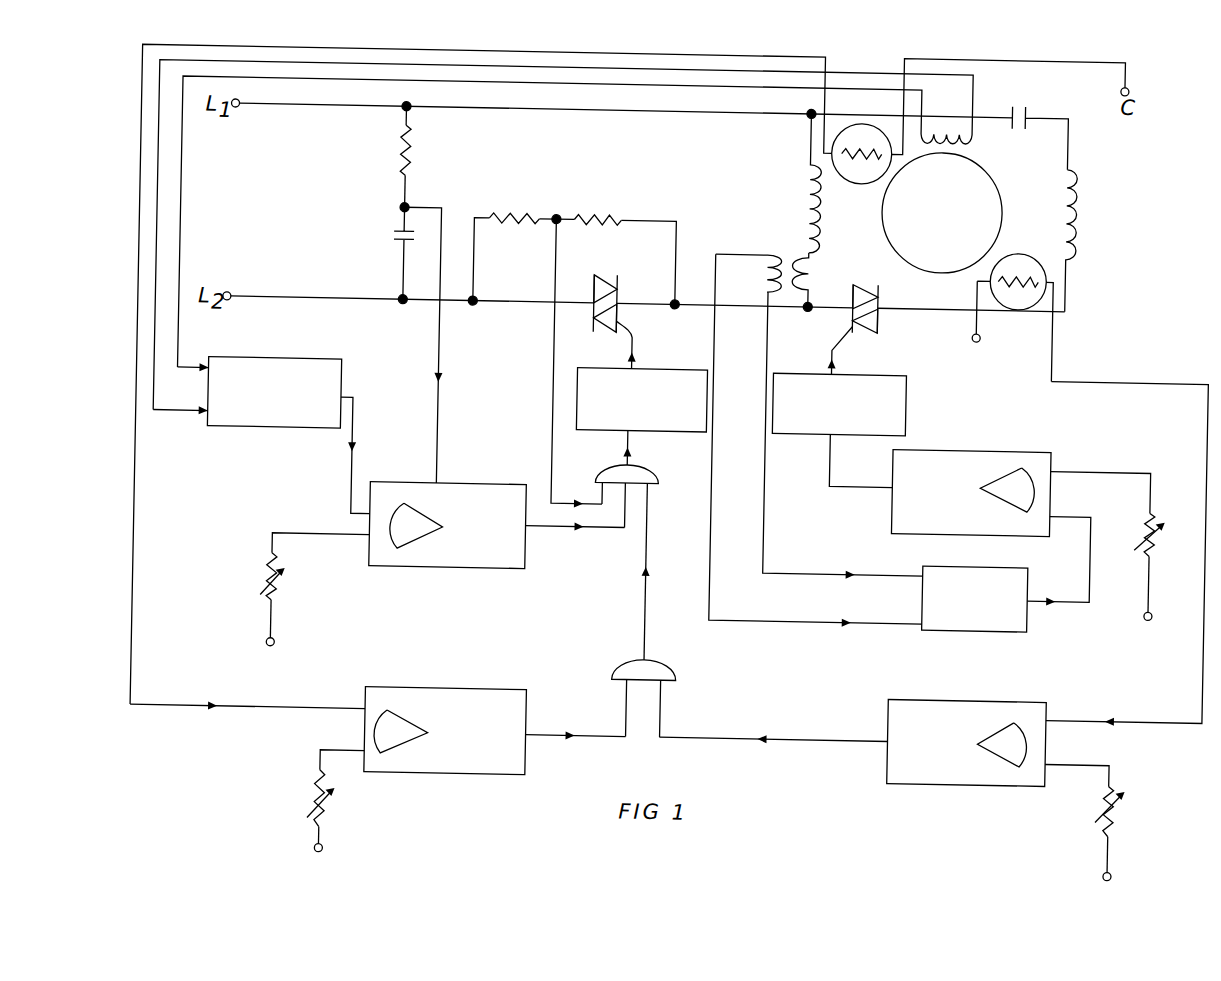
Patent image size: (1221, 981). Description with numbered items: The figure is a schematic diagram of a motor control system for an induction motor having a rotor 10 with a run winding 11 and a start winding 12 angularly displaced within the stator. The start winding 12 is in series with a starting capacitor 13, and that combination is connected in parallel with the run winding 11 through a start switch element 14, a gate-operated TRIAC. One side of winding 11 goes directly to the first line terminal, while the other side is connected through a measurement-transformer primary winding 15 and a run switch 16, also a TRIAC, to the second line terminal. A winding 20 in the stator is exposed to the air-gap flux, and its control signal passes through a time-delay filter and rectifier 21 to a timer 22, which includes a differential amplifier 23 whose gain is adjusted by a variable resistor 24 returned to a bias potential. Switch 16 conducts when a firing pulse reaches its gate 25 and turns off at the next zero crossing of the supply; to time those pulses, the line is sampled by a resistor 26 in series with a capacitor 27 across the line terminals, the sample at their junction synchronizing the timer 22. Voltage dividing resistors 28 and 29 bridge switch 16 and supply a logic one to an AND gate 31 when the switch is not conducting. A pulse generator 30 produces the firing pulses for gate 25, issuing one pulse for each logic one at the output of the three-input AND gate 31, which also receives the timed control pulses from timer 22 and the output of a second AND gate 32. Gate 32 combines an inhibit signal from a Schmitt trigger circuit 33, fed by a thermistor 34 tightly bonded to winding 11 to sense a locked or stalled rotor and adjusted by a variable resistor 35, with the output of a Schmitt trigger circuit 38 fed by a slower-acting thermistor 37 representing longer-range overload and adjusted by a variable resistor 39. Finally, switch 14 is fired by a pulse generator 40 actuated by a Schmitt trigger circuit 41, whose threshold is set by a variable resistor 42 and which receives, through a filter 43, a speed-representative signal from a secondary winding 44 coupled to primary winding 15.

The rotor 10 is at (998, 213).
The run winding 11 is at (815, 240).
The start winding 12 is at (1073, 215).
The starting capacitor 13 is at (1026, 107).
The start switch element 14 is at (878, 325).
The measurement-transformer primary winding 15 is at (797, 274).
The run switch 16 is at (629, 313).
The winding 20 is at (960, 133).
The time-delay filter and rectifier 21 is at (314, 363).
The timer 22 is at (447, 508).
The differential amplifier 23 is at (420, 545).
The variable resistor 24 is at (283, 603).
The gate 25 is at (630, 339).
The resistor 26 is at (410, 152).
The capacitor 27 is at (391, 249).
The voltage dividing resistor 28 is at (518, 206).
The voltage dividing resistor 29 is at (600, 205).
The pulse generator 30 is at (698, 368).
The AND gate 31 is at (654, 474).
The AND gate 32 is at (676, 677).
The Schmitt trigger circuit 33 is at (468, 687).
The thermistor 34 is at (857, 168).
The variable resistor 35 is at (338, 812).
The thermistor 37 is at (1022, 294).
The Schmitt trigger circuit 38 is at (1016, 694).
The variable resistor 39 is at (1125, 780).
The pulse generator 40 is at (905, 405).
The Schmitt trigger circuit 41 is at (1006, 444).
The variable resistor 42 is at (1156, 542).
The filter 43 is at (1026, 584).
The secondary winding 44 is at (774, 276).